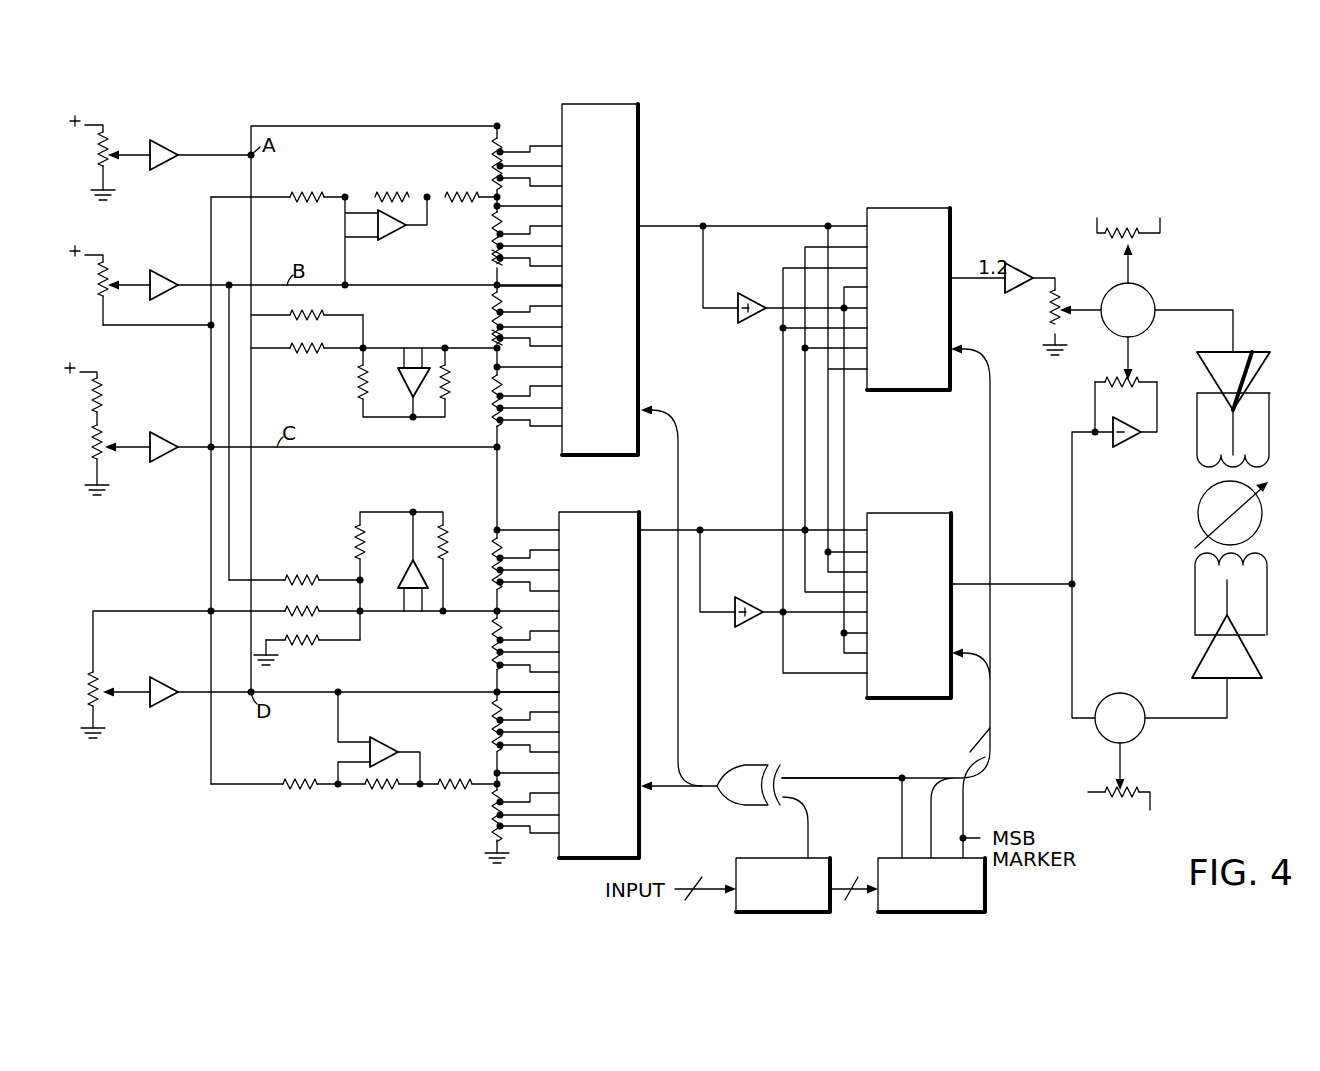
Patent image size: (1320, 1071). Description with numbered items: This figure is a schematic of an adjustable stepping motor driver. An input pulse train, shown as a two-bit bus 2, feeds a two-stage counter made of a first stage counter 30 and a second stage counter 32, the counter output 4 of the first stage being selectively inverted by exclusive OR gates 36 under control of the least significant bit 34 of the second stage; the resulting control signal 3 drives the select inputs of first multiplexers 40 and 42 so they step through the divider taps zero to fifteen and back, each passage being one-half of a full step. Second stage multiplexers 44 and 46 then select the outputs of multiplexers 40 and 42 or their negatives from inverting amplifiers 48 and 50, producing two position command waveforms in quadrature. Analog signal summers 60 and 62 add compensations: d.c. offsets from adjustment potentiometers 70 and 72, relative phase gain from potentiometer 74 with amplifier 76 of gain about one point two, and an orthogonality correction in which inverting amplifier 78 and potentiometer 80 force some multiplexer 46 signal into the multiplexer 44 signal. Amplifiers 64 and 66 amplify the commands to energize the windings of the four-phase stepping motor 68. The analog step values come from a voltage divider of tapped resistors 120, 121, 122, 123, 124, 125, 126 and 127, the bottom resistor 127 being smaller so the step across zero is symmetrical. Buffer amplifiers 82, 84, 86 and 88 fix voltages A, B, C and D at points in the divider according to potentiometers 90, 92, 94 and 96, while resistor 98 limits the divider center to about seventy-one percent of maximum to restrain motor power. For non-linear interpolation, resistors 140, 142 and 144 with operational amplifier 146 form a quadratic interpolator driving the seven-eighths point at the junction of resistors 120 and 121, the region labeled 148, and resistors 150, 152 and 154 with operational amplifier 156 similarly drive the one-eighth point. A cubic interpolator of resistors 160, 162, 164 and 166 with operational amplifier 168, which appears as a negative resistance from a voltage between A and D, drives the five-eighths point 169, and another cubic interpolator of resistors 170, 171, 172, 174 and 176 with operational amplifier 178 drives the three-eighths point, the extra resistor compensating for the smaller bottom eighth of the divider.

The bus width marker 2 is at (784, 868).
The select line 3 is at (991, 729).
The counter output line 4 is at (800, 836).
The first stage counter 30 is at (781, 858).
The second stage counter 32 is at (987, 895).
The least significant bit 34 is at (844, 778).
The exclusive OR gates 36 is at (750, 765).
The first multiplexer 40 is at (640, 372).
The first multiplexer 42 is at (624, 512).
The second stage multiplexer 44 is at (938, 392).
The second stage multiplexer 46 is at (936, 698).
The inverting amplifier 48 is at (752, 316).
The inverting amplifier 50 is at (754, 620).
The analog signal summer 60 is at (1146, 324).
The analog signal summer 62 is at (1128, 702).
The amplifier 64 is at (1240, 354).
The amplifier 66 is at (1232, 690).
The four-phase stepping motor 68 is at (1198, 514).
The adjustment potentiometer 70 is at (1146, 238).
The adjustment potentiometer 72 is at (1148, 790).
The potentiometer 74 is at (1051, 324).
The amplifier 76 is at (1018, 270).
The inverting amplifier 78 is at (1134, 444).
The potentiometer 80 is at (1162, 380).
The buffer amplifier 82 is at (168, 149).
The buffer amplifier 84 is at (168, 279).
The buffer amplifier 86 is at (168, 441).
The buffer amplifier 88 is at (168, 686).
The potentiometer 90 is at (98, 168).
The potentiometer 92 is at (98, 298).
The potentiometer 94 is at (92, 462).
The potentiometer 96 is at (90, 686).
The resistor 98 is at (100, 404).
The tapped resistor 120 is at (490, 160).
The tapped resistor 121 is at (493, 260).
The tapped resistor 122 is at (492, 322).
The tapped resistor 123 is at (490, 418).
The tapped resistor 124 is at (490, 580).
The tapped resistor 125 is at (490, 650).
The tapped resistor 126 is at (490, 726).
The tapped resistor 127 is at (486, 828).
The resistor 140 is at (330, 192).
The resistor 142 is at (416, 192).
The resistor 144 is at (441, 192).
The operational amplifier 146 is at (390, 238).
The resistor 148 is at (494, 219).
The resistor 150 is at (290, 788).
The resistor 152 is at (372, 788).
The resistor 154 is at (458, 797).
The operational amplifier 156 is at (387, 751).
The resistor 160 is at (322, 306).
The resistor 162 is at (324, 353).
The resistor 164 is at (358, 388).
The resistor 166 is at (448, 398).
The operational amplifier 168 is at (400, 386).
The five-eighths point 169 is at (488, 344).
The resistor 170 is at (320, 578).
The resistor 171 is at (316, 610).
The resistor 172 is at (308, 640).
The resistor 174 is at (356, 534).
The resistor 176 is at (446, 537).
The operational amplifier 178 is at (406, 574).